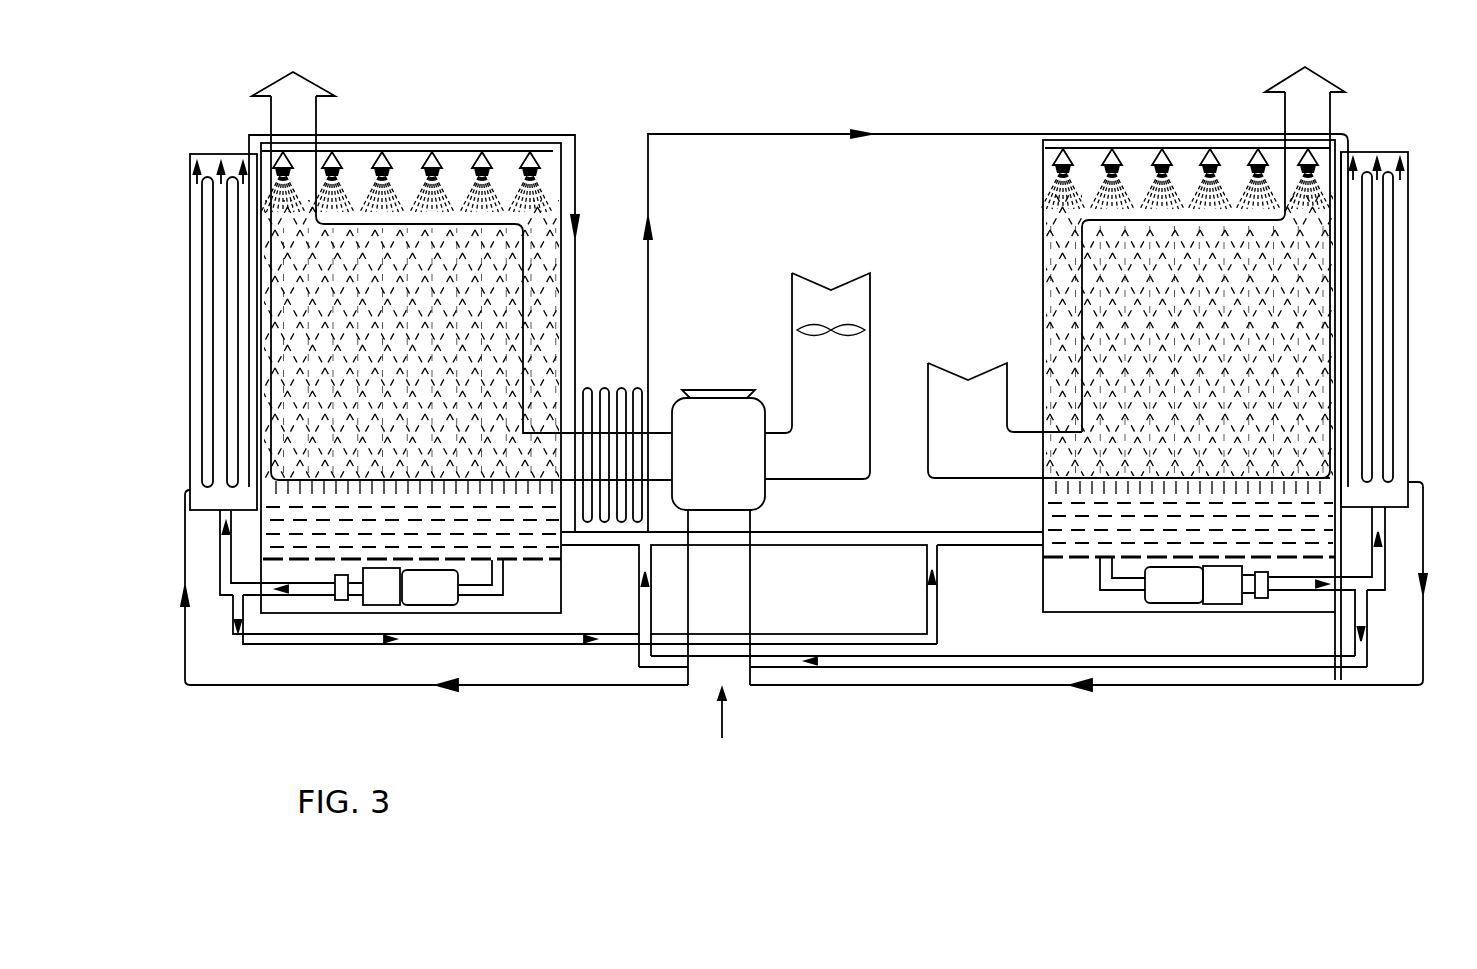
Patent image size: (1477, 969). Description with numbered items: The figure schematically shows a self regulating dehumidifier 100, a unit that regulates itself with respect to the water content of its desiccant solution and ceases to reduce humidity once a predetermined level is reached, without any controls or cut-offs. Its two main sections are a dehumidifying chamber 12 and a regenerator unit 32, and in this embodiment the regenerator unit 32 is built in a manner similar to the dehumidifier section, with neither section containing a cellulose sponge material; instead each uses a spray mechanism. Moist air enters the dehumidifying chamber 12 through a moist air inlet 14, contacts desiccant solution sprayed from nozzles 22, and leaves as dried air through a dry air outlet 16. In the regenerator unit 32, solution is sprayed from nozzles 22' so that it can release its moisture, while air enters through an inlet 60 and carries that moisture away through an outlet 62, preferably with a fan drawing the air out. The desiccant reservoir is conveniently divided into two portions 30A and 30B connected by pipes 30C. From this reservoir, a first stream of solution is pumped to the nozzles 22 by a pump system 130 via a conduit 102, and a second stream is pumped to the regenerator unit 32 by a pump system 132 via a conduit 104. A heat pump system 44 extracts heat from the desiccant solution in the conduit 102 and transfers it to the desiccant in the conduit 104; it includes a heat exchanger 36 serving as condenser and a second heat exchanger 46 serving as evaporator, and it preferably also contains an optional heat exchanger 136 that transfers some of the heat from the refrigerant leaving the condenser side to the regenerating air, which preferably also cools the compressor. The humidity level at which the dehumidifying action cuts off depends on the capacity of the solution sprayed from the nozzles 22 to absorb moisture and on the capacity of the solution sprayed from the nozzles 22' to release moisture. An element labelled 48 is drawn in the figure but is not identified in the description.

The dehumidifying chamber 12 is at (1040, 222).
The moist air inlet 14 is at (1008, 382).
The dry air outlet 16 is at (1318, 70).
The nozzles 22 is at (1185, 150).
The nozzles 22' is at (410, 149).
The reservoir portion 30A is at (577, 557).
The reservoir portion 30B is at (1040, 513).
The pipes 30C is at (862, 543).
The regenerator unit 32 is at (562, 177).
The heat exchanger 36 is at (212, 177).
The heat pump system 44 is at (721, 725).
The second heat exchanger 46 is at (1388, 170).
The blower 48 is at (767, 483).
The inlet 60 is at (790, 307).
The outlet 62 is at (308, 76).
The self regulating dehumidifier 100 is at (1044, 728).
The conduit 102 is at (1413, 222).
The conduit 104 is at (190, 297).
The pump system 130 is at (1173, 590).
The pump system 132 is at (452, 603).
The heat exchanger 136 is at (585, 383).